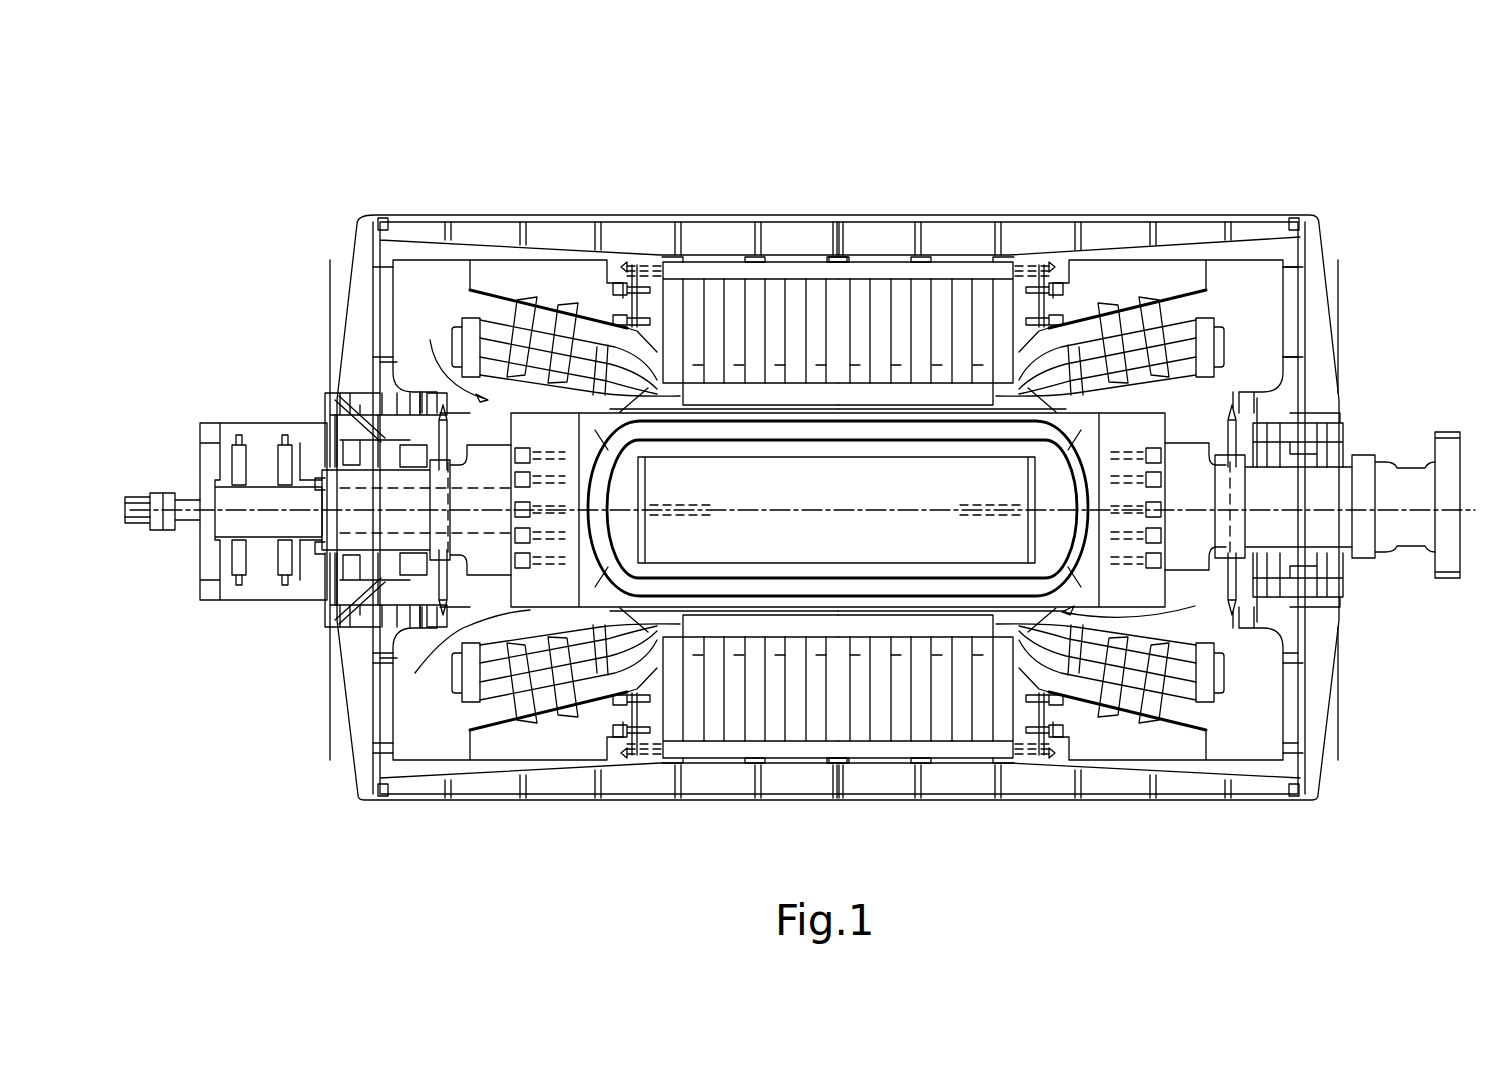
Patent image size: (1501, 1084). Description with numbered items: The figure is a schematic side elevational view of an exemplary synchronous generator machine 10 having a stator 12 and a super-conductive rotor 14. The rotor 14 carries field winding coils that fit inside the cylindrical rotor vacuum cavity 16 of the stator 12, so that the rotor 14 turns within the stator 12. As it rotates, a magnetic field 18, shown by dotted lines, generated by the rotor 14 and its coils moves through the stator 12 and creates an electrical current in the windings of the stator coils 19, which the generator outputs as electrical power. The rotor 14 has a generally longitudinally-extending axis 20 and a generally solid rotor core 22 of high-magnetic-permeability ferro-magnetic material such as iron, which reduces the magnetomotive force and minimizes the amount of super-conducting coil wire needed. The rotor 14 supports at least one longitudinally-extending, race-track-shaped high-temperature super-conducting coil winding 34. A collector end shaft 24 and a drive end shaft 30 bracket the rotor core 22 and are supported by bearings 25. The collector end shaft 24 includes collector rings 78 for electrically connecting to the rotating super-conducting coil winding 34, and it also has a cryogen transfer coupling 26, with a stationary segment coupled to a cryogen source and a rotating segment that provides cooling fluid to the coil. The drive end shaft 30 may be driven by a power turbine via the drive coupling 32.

The synchronous generator machine 10 is at (557, 138).
The stator 12 is at (733, 304).
The rotor 14 is at (838, 510).
The rotor vacuum cavity 16 is at (818, 465).
The magnetic field 18 is at (940, 355).
The stator coils 19 is at (1185, 690).
The longitudinally-extending axis 20 is at (345, 505).
The rotor core 22 is at (794, 539).
The collector end shaft 24 is at (405, 495).
The bearings 25 is at (395, 625).
The cryogen transfer coupling 26 is at (180, 495).
The drive end shaft 30 is at (1325, 490).
The drive coupling 32 is at (1452, 576).
The HTS coil winding 34 is at (1097, 418).
The collector rings 78 is at (282, 598).